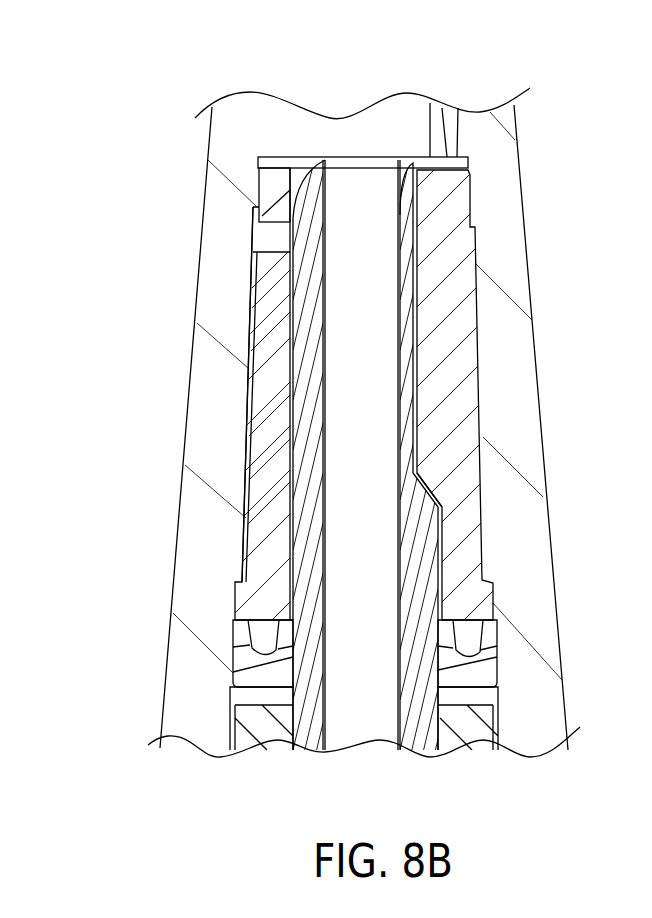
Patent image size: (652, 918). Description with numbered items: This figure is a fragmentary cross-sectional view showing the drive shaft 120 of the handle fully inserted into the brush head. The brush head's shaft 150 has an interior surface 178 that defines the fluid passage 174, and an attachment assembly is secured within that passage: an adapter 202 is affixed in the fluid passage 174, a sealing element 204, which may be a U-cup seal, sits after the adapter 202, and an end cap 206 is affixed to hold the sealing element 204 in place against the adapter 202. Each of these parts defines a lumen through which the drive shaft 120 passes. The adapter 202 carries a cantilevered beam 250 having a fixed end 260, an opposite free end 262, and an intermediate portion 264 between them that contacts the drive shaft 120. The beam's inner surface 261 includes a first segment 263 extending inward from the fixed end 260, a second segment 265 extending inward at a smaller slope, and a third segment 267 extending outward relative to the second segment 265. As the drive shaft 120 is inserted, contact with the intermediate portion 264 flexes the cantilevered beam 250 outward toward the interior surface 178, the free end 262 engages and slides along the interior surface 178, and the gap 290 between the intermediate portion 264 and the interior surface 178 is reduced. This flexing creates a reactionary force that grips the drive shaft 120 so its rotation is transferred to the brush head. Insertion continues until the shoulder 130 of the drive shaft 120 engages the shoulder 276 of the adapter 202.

The drive shaft 120 is at (343, 745).
The shoulder 130 is at (425, 484).
The shaft 150 is at (209, 134).
The fluid passage 174 is at (355, 132).
The interior surface 178 is at (245, 420).
The adapter 202 is at (445, 258).
The sealing element 204 is at (475, 668).
The end cap 206 is at (477, 742).
The cantilevered beam 250 is at (260, 317).
The fixed end 260 is at (263, 565).
The inner surface 261 is at (293, 297).
The free end 262 is at (267, 277).
The first segment 263 is at (270, 513).
The intermediate portion 264 is at (278, 427).
The second segment 265 is at (270, 455).
The third segment 267 is at (250, 335).
The shoulder 276 is at (420, 483).
The gap 290 is at (247, 384).